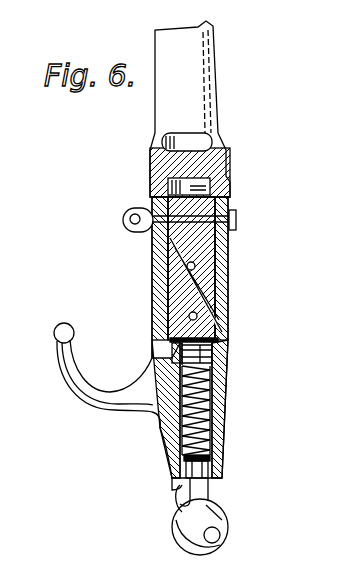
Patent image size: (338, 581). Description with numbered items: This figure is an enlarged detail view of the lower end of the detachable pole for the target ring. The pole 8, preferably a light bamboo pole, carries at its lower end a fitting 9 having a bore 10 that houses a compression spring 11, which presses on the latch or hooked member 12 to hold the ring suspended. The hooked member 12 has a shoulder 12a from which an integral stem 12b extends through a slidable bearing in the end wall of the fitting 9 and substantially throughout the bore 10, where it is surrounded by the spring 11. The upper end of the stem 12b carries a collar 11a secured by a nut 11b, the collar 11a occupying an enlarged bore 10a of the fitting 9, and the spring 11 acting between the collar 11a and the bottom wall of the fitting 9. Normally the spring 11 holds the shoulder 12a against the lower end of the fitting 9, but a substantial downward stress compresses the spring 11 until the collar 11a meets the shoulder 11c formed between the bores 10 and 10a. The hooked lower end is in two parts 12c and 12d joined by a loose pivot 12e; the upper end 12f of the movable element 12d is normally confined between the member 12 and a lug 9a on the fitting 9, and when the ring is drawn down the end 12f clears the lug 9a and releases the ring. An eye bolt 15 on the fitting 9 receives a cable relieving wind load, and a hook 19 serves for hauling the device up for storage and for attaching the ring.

The pole 8 is at (205, 72).
The fitting 9 is at (230, 283).
The lug 9a is at (172, 480).
The bore 10 is at (228, 398).
The enlarged bore 10a is at (172, 340).
The compression spring 11 is at (230, 418).
The collar 11a is at (222, 354).
The nut 11b is at (226, 346).
The shoulder 11c is at (222, 364).
The hooked member 12 is at (216, 492).
The shoulder 12a is at (215, 472).
The stem 12b is at (222, 462).
The hook part 12c is at (215, 518).
The movable hook element 12d is at (183, 525).
The loose pivot 12e is at (220, 537).
The upper end of movable element 12f is at (180, 500).
The eye bolt 15 is at (126, 232).
The hook 19 is at (72, 383).